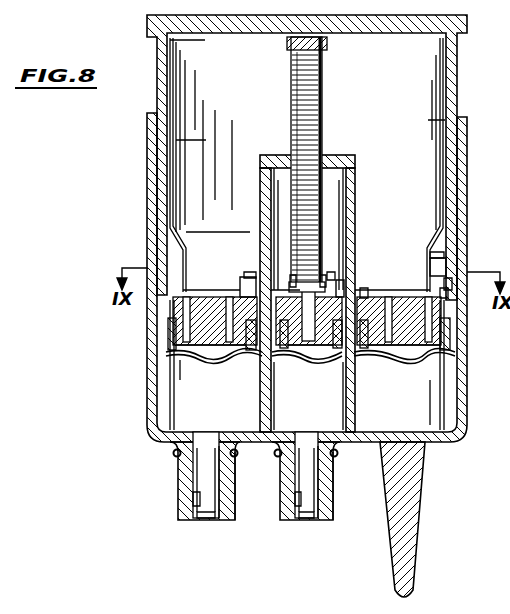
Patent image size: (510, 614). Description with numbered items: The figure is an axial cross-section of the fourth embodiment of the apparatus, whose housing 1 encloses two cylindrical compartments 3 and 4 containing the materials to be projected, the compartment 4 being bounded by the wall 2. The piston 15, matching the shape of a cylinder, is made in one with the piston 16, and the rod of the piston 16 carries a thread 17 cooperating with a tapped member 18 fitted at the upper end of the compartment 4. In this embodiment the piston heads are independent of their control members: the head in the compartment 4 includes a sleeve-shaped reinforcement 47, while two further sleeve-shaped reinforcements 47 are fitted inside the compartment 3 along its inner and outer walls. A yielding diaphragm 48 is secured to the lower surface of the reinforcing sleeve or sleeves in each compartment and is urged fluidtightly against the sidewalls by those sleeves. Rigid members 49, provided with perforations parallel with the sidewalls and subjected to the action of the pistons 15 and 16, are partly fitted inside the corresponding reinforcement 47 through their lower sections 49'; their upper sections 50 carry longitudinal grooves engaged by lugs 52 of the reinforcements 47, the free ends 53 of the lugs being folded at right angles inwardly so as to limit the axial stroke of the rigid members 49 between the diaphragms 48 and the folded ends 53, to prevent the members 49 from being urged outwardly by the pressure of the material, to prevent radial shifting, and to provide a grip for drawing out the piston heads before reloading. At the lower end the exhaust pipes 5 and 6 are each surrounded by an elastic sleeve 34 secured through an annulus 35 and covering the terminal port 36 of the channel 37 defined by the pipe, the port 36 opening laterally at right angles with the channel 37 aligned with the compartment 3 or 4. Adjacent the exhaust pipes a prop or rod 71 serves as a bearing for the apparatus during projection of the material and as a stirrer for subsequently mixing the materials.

The outer housing sleeve 1 is at (463, 140).
The wall 2 is at (355, 176).
The compartment 3 is at (423, 365).
The compartment 4 is at (308, 396).
The exhaust pipe 5 is at (188, 470).
The exhaust pipe 6 is at (288, 474).
The piston 15 is at (452, 70).
The piston 16 is at (326, 46).
The thread 17 is at (322, 92).
The tapped member 18 is at (337, 157).
The elastic sleeve 34 is at (226, 481).
The annulus 35 is at (237, 455).
The terminal port 36 is at (181, 504).
The channel 37 is at (208, 516).
The reinforcement 47 is at (457, 316).
The yielding diaphragm 48 is at (457, 352).
The rigid member 49 is at (337, 250).
The lower section 49' is at (333, 352).
The upper section 50 is at (457, 300).
The lug 52 is at (243, 282).
The free end 53 is at (245, 276).
The prop or rod 71 is at (410, 534).